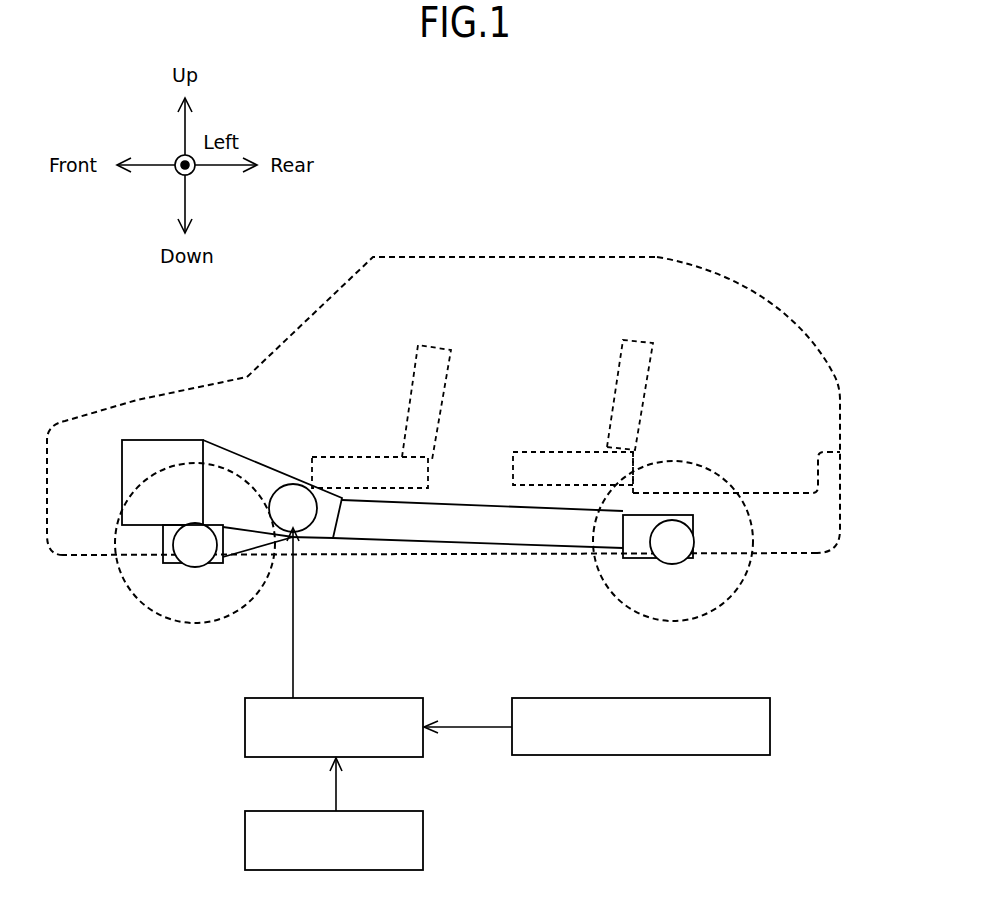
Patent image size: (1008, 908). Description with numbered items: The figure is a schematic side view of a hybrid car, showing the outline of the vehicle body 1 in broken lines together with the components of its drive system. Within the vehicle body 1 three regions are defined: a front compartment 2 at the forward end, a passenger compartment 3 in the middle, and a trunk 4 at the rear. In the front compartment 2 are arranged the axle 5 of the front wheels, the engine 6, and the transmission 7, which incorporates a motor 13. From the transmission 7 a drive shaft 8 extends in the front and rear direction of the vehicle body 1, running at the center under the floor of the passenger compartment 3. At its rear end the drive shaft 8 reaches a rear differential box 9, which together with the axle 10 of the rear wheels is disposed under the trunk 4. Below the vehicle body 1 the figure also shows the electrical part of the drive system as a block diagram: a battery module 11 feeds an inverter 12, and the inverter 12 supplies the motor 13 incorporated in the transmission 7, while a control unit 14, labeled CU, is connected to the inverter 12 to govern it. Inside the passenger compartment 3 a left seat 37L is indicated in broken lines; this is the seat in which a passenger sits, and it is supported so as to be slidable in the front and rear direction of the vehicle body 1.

The vehicle body 1 is at (733, 282).
The front compartment 2 is at (130, 421).
The passenger compartment 3 is at (345, 324).
The trunk 4 is at (752, 353).
The axle of front wheels 5 is at (197, 548).
The engine 6 is at (163, 440).
The transmission 7 is at (278, 471).
The drive shaft 8 is at (460, 541).
The rear differential box 9 is at (633, 560).
The axle of rear wheels 10 is at (673, 548).
The battery module 11 is at (614, 753).
The inverter 12 is at (425, 705).
The motor 13 is at (307, 522).
The control unit 14 is at (423, 848).
The left seat 37L is at (433, 340).